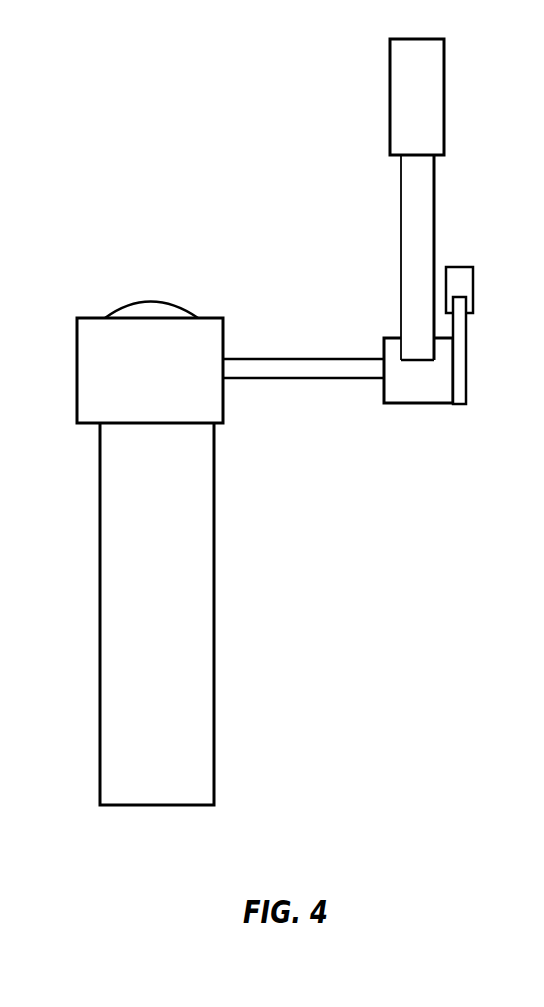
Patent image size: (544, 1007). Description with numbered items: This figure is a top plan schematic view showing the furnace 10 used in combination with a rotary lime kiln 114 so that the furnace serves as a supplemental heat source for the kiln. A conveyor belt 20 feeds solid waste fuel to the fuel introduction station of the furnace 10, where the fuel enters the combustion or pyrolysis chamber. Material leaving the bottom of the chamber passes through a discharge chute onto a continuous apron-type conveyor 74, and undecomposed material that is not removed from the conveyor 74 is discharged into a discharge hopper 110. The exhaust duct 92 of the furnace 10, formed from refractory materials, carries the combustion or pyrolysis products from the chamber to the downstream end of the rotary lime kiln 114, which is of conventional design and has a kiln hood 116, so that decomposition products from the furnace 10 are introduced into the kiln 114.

The furnace 10 is at (420, 401).
The conveyor belt 20 is at (436, 199).
The apron-type conveyor 74 is at (458, 348).
The exhaust duct 92 is at (325, 366).
The discharge hopper 110 is at (462, 279).
The rotary lime kiln 114 is at (195, 610).
The kiln hood 116 is at (208, 337).